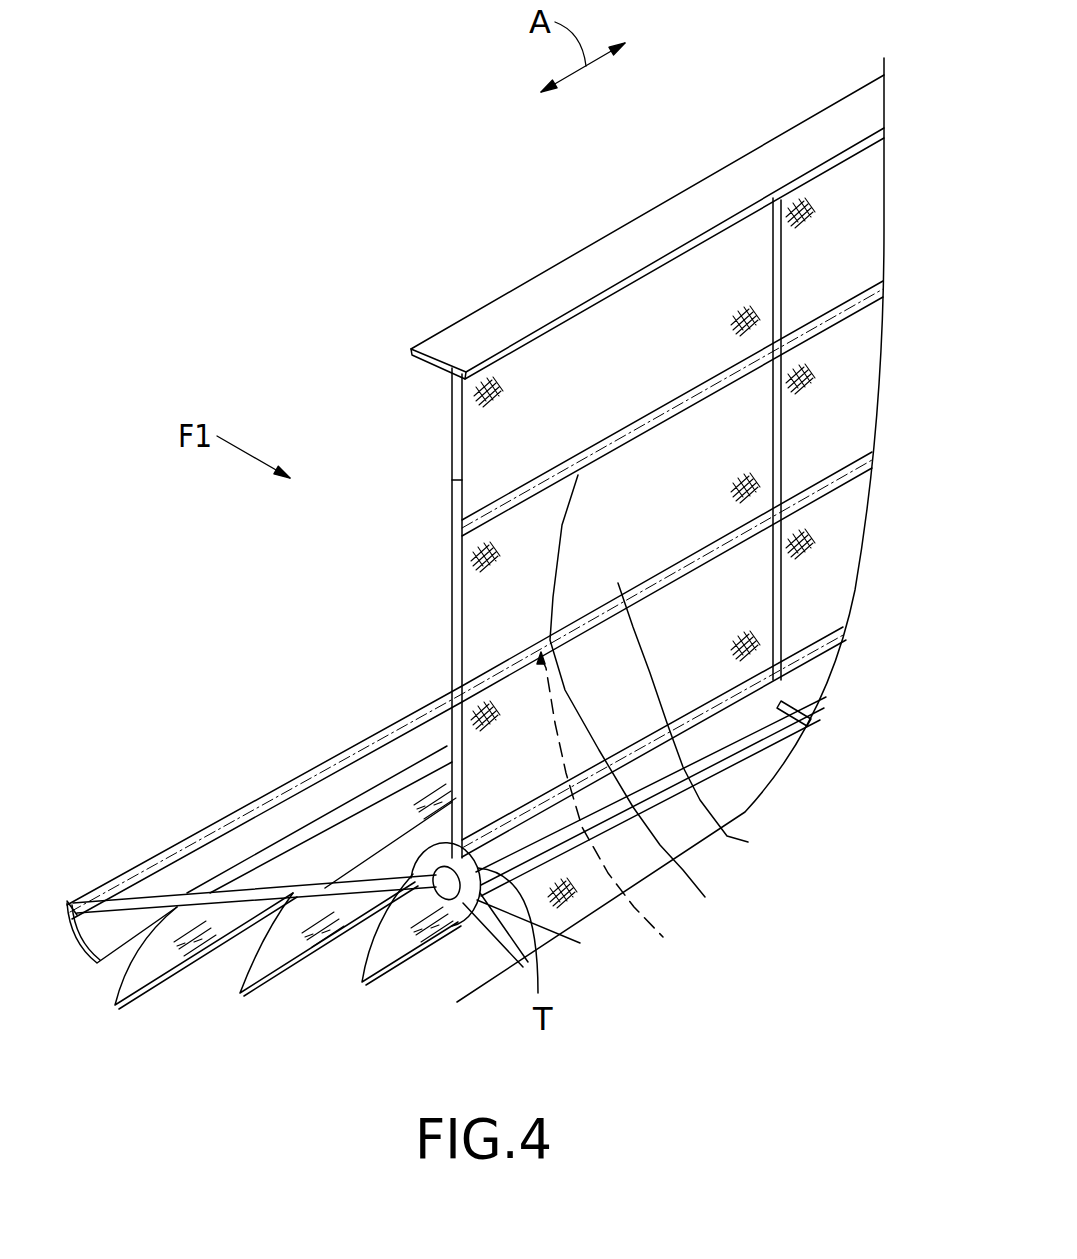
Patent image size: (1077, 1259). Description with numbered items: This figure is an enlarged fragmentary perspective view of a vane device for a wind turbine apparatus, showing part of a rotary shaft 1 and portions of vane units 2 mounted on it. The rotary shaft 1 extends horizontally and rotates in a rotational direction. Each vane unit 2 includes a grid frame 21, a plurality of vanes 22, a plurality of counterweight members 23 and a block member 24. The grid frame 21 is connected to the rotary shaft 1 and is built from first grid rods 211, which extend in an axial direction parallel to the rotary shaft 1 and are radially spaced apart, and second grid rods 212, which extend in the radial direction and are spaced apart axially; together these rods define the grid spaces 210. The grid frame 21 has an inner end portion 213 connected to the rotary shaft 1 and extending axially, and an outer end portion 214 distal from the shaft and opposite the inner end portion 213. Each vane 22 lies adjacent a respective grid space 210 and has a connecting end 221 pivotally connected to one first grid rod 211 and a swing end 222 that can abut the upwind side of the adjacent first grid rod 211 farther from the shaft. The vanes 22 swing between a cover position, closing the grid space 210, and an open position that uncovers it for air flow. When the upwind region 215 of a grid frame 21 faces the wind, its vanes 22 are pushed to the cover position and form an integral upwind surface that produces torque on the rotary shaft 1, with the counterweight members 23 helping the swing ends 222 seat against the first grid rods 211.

The rotary shaft 1 is at (712, 728).
The vane unit 2 is at (520, 262).
The grid frame 21 is at (430, 392).
The vane 22 is at (643, 460).
The counterweight member 23 is at (619, 806).
The block member 24 is at (492, 323).
The grid space 210 is at (215, 865).
The first grid rod 211 is at (533, 490).
The second grid rod 212 is at (777, 197).
The inner end portion 213 is at (506, 825).
The outer end portion 214 is at (450, 373).
The upwind region 215 is at (476, 498).
The connecting end 221 is at (713, 722).
The swing end 222 is at (654, 693).